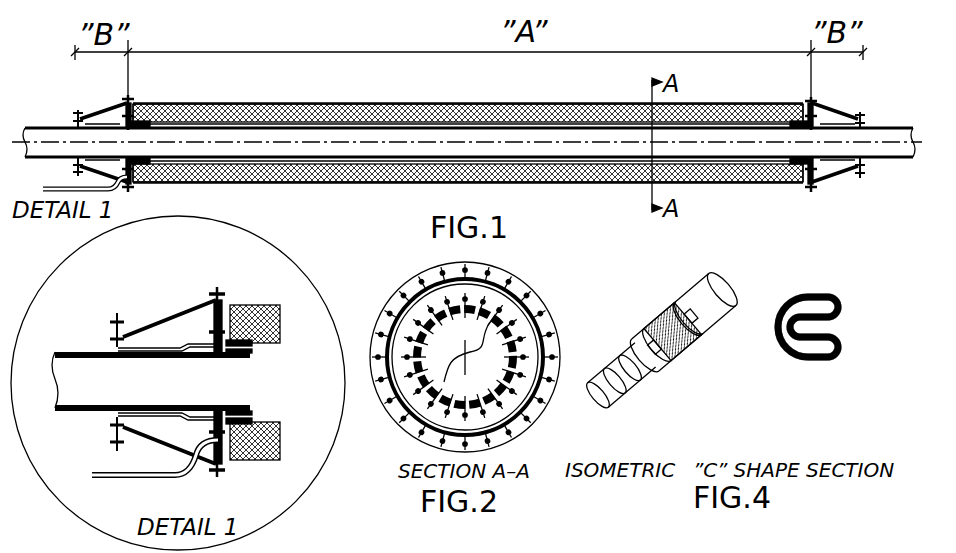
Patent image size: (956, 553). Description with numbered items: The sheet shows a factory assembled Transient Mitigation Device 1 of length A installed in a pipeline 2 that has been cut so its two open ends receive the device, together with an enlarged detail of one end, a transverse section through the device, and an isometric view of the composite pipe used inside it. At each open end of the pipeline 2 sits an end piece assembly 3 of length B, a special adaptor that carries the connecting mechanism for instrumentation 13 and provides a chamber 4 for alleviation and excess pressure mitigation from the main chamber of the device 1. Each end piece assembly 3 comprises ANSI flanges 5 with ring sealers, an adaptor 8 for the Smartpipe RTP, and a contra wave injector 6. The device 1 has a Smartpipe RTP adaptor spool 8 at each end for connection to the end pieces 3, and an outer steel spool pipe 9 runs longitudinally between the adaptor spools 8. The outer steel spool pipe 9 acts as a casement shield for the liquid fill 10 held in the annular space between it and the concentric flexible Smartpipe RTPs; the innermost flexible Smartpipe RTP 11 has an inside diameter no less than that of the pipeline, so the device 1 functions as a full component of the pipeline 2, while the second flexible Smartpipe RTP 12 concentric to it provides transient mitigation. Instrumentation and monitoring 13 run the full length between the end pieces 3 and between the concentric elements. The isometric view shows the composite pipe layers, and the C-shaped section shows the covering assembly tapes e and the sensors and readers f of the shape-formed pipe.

In FIG. 1, the Transient Mitigation Device 1 is at (388, 52).
In FIG. 1, the pipeline 2 is at (893, 128).
In FIG. 2, the pipeline 2 is at (512, 325).
In FIG. 1, the end piece assembly 3 is at (90, 115).
In FIG. 1, the chamber 4 is at (167, 337).
In FIG. 1, the ANSI flange 5 is at (220, 475).
In FIG. 1, the contra wave injector 6 is at (127, 483).
In FIG. 1, the Smartpipe RTP adaptor spool 8 is at (250, 348).
In FIG. 1, the outer steel spool pipe 9 is at (445, 105).
In FIG. 2, the outer steel spool pipe 9 is at (477, 303).
In FIG. 1, the liquid fill 10 is at (325, 184).
In FIG. 1, the innermost flexible Smartpipe RTP 11 is at (700, 164).
In FIG. 1, the second flexible Smartpipe RTP 12 is at (552, 184).
In FIG. 1, the instrumentation and monitoring 13 is at (118, 120).
In FIG. 4, the covering assembly tapes e is at (839, 326).
In FIG. 4, the sensors and readers f is at (832, 350).